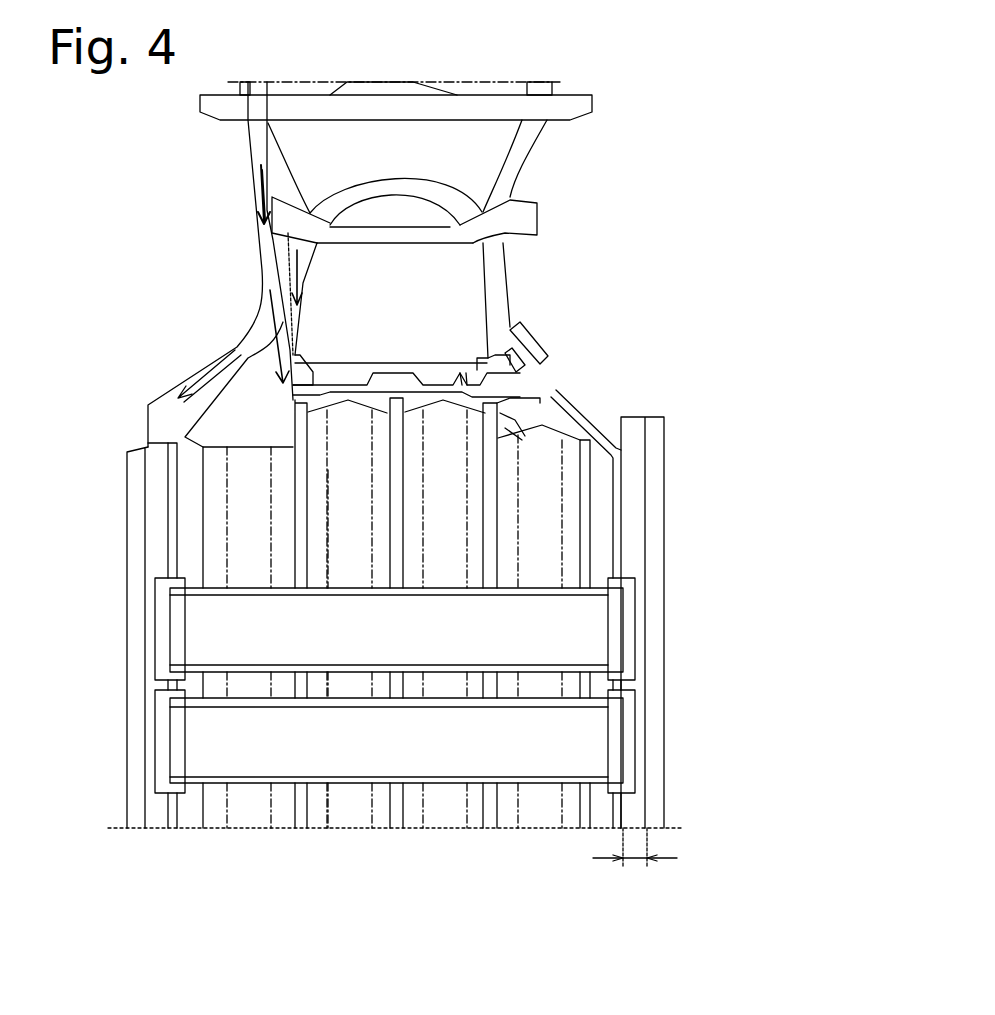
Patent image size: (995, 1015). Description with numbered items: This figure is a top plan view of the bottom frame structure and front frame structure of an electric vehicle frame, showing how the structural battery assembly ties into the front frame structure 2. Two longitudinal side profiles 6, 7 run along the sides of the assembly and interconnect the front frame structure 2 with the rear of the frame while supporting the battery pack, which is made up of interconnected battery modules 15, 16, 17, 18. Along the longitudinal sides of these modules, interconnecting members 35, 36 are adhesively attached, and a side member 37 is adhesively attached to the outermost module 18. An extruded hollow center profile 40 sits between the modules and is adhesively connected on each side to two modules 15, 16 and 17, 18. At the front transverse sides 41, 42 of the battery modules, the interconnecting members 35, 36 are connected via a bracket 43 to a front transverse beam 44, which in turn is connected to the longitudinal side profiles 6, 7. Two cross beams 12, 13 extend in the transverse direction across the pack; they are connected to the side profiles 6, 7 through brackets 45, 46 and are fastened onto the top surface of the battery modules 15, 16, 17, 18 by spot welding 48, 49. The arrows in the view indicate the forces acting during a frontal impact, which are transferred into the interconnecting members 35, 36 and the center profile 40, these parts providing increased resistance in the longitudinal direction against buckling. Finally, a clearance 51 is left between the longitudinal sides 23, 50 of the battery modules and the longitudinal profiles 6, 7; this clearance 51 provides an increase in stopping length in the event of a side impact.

The front frame structure 2 is at (500, 270).
The longitudinal side profile 6 is at (655, 476).
The longitudinal side profile 7 is at (162, 565).
The cross beam 12 is at (595, 630).
The cross beam 13 is at (598, 733).
The battery module 15 is at (555, 822).
The battery module 16 is at (475, 825).
The battery module 17 is at (338, 822).
The battery module 18 is at (240, 822).
The longitudinal side 23 is at (203, 800).
The interconnecting member 35 is at (495, 812).
The interconnecting member 36 is at (303, 818).
The side member 37 is at (203, 822).
The center profile 40 is at (395, 822).
The front transverse side 41 is at (432, 410).
The front transverse side 42 is at (552, 425).
The bracket 43 is at (523, 407).
The front transverse beam 44 is at (583, 420).
The bracket 45 is at (618, 650).
The bracket 46 is at (175, 730).
The spot welding 48 is at (440, 600).
The spot welding 49 is at (432, 780).
The longitudinal side 50 is at (590, 557).
The clearance 51 is at (665, 860).